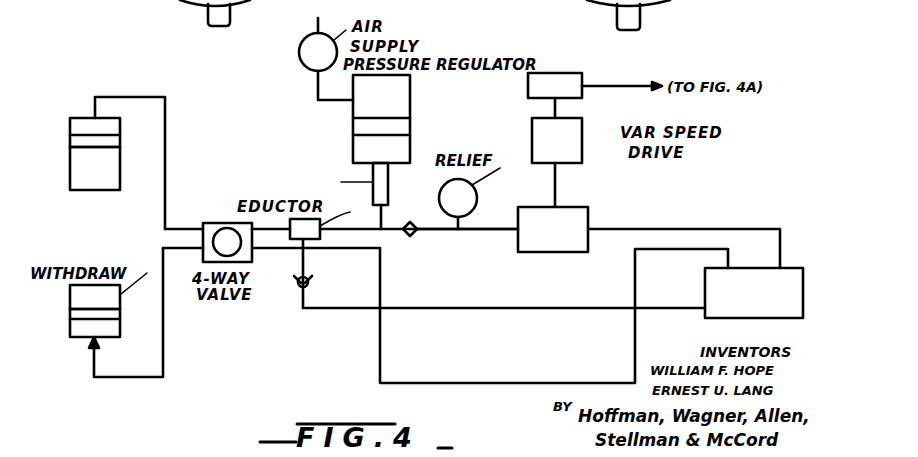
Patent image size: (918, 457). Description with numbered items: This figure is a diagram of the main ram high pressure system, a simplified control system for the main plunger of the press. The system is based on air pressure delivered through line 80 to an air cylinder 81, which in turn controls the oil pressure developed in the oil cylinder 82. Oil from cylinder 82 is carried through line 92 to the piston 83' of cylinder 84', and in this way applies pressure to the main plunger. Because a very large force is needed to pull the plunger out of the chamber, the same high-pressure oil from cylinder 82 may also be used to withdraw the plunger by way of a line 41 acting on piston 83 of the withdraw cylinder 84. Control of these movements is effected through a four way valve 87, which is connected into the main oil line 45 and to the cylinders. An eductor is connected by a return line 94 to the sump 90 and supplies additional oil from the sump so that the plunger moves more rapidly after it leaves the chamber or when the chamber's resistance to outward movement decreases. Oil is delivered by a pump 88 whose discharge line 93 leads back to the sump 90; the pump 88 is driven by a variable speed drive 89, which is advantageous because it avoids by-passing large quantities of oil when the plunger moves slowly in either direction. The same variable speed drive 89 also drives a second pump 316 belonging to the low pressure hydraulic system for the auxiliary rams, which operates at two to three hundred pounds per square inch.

The air pressure line 80 is at (316, 22).
The air cylinder 81 is at (410, 112).
The oil cylinder 82 is at (388, 190).
The piston 83 is at (72, 312).
The piston 83' is at (71, 154).
The piston 84 is at (72, 305).
The cylinder 84' is at (114, 161).
The four way valve 87 is at (215, 222).
The pump 88 is at (590, 209).
The variable speed drive 89 is at (583, 125).
The sump 90 is at (800, 270).
The line 92 is at (168, 138).
The line 93 is at (712, 230).
The return line 94 is at (636, 307).
The line 41 is at (167, 338).
The line 45 is at (492, 233).
The pump 316 is at (528, 90).